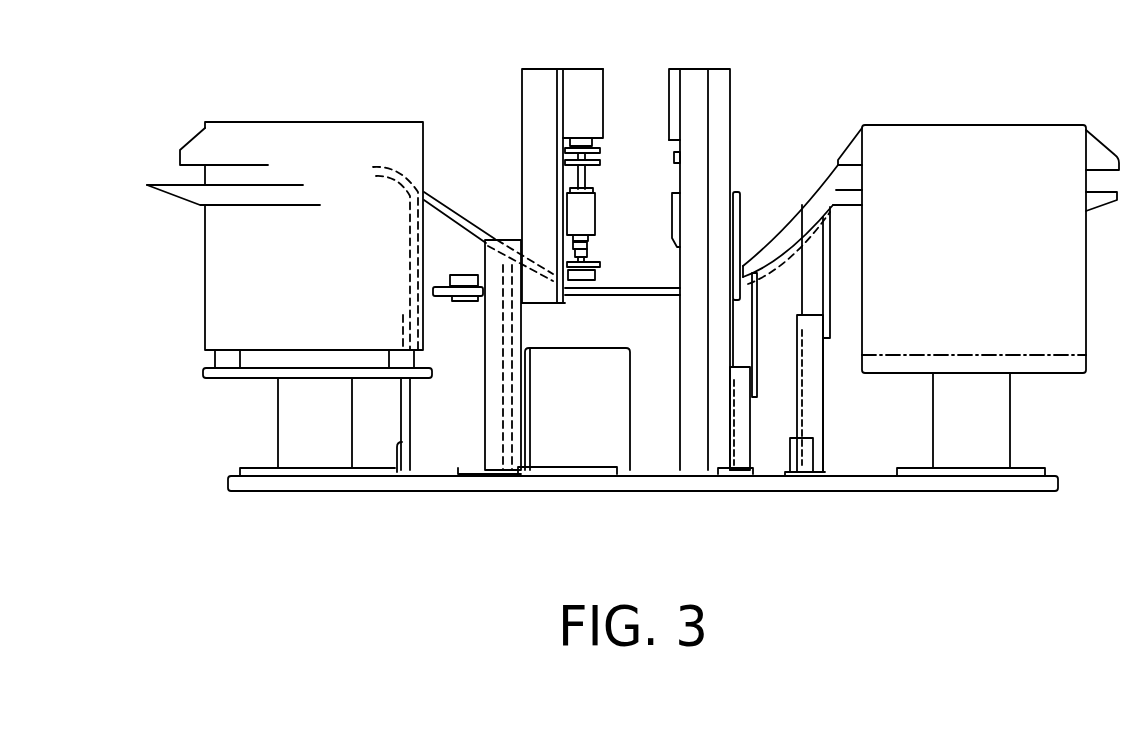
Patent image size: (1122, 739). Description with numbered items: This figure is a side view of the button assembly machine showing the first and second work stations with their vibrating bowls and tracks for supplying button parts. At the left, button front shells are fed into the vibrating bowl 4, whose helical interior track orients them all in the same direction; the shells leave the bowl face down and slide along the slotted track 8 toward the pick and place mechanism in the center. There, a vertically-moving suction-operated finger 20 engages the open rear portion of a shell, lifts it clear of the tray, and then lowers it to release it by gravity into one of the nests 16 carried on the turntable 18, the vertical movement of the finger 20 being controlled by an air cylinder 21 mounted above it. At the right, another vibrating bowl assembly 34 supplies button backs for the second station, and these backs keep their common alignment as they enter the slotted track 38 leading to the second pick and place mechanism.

The vibrating bowl 4 is at (322, 291).
The slotted track 8 is at (454, 214).
The nest 16 is at (467, 273).
The turntable 18 is at (651, 294).
The suction-operated finger 20 is at (588, 251).
The air cylinder 21 is at (587, 88).
The vibrating bowl assembly 34 is at (965, 277).
The slotted track 38 is at (781, 242).